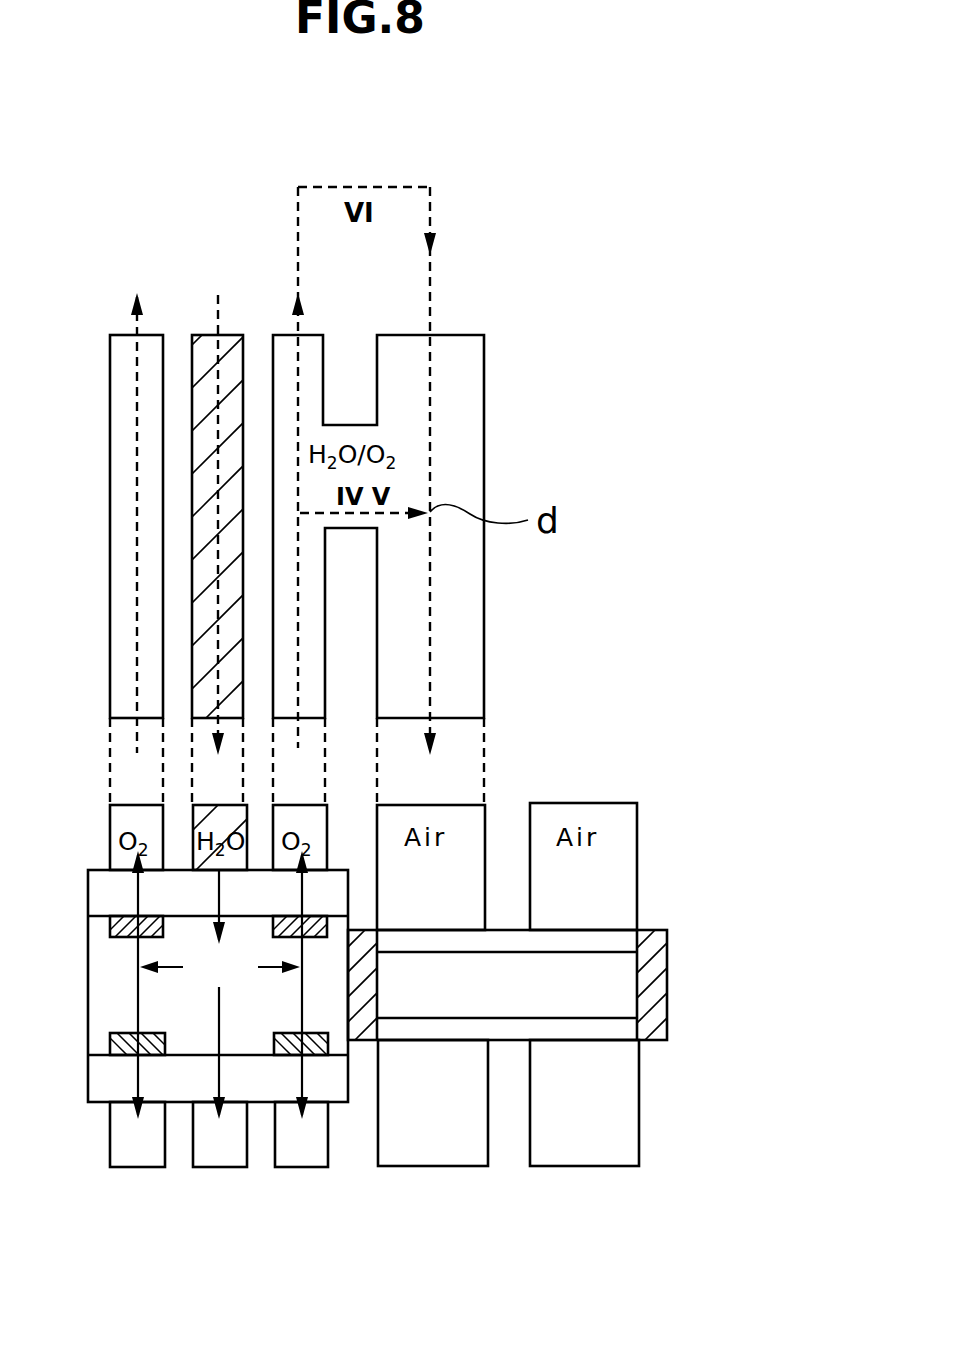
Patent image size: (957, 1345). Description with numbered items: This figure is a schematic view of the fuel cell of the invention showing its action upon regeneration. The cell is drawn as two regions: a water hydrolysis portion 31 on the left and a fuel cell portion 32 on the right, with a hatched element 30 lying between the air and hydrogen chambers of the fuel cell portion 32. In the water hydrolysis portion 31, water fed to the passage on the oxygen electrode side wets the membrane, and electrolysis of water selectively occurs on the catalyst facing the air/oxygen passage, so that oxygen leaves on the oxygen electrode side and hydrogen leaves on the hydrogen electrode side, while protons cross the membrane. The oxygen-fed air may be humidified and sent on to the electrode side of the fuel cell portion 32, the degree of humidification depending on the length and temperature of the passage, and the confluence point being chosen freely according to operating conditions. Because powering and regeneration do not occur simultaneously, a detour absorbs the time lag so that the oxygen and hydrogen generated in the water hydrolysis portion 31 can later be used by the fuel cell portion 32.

The electrolyte membrane 30 is at (667, 977).
The water hydrolysis portion 31 is at (355, 1230).
The fuel cell portion 32 is at (641, 1230).